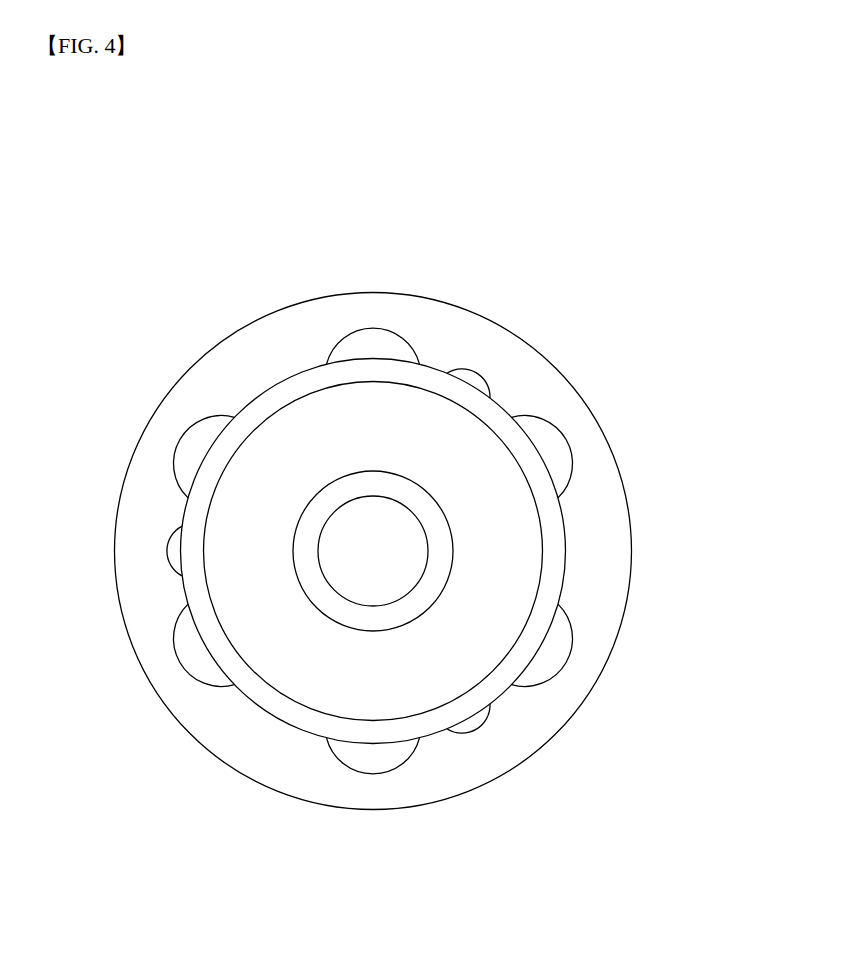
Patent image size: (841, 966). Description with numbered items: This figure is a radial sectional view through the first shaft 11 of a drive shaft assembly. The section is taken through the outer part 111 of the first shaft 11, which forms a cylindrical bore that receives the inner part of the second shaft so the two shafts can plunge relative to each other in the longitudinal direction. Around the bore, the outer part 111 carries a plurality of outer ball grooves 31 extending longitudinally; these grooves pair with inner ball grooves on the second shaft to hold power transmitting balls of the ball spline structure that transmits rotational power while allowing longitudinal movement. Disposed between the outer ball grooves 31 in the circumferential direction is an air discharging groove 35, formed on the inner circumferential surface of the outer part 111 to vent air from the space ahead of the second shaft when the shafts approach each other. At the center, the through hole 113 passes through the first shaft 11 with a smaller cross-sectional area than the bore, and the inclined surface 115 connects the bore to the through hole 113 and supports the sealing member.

The first shaft 11 is at (417, 232).
The outer part 111 is at (492, 340).
The through hole 113 is at (373, 552).
The inclined surface 115 is at (322, 662).
The outer ball grooves 31 is at (372, 342).
The air discharging groove 35 is at (470, 376).